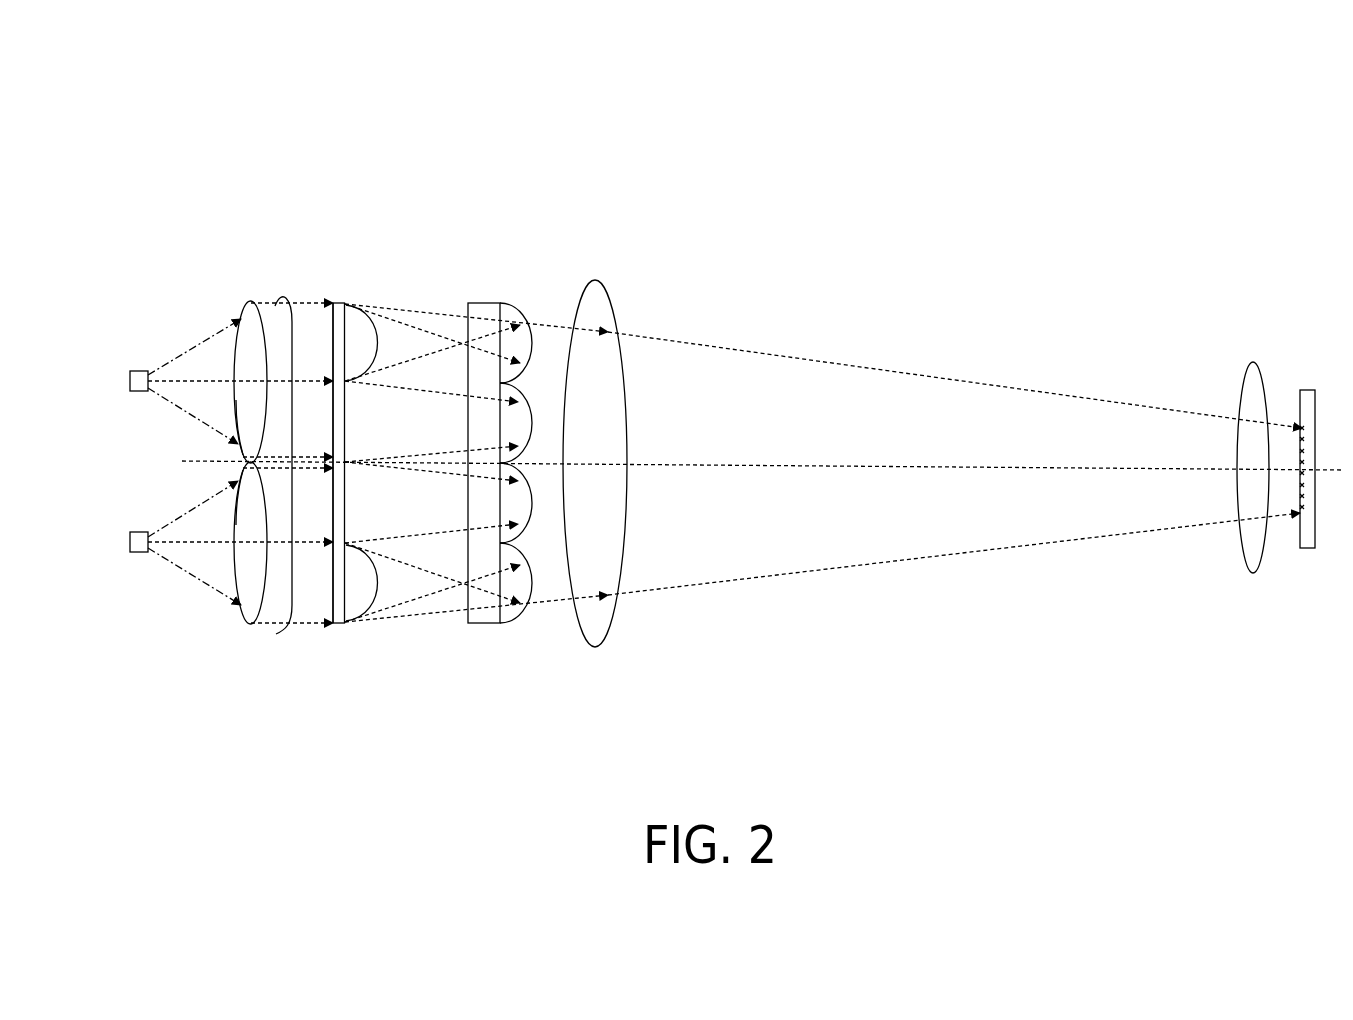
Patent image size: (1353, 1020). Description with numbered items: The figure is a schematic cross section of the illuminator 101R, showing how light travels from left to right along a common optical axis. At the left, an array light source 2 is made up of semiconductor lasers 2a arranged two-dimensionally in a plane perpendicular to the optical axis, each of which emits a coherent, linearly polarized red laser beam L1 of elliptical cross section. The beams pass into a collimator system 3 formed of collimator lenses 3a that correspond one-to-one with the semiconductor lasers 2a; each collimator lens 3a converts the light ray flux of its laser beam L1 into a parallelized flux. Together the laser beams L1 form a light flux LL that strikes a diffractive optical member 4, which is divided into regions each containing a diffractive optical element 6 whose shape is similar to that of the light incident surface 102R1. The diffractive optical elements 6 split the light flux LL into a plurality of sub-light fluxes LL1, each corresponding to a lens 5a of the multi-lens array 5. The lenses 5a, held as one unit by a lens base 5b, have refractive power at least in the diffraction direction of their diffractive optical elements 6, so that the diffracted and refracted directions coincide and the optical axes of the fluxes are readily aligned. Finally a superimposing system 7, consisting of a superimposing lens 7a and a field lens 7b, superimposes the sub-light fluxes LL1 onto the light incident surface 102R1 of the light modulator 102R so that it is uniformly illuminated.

The illuminator 101R is at (1287, 150).
The array light source 2 is at (137, 350).
The semiconductor laser 2a is at (129, 382).
The collimator system 3 is at (247, 290).
The collimator lens 3a is at (245, 414).
The diffractive optical member 4 is at (338, 290).
The multi-lens array 5 is at (500, 292).
The lens 5a is at (500, 428).
The lens base 5b is at (485, 625).
The diffractive optical element 6 is at (338, 335).
The superimposing system 7 is at (1285, 203).
The superimposing lens 7a is at (598, 280).
The field lens 7b is at (1251, 382).
The light modulator 102R is at (1306, 550).
The light incident surface 102R1 is at (1300, 410).
The light flux LL is at (282, 292).
The sub-light flux LL1 is at (370, 320).
The laser beam L1 is at (180, 572).